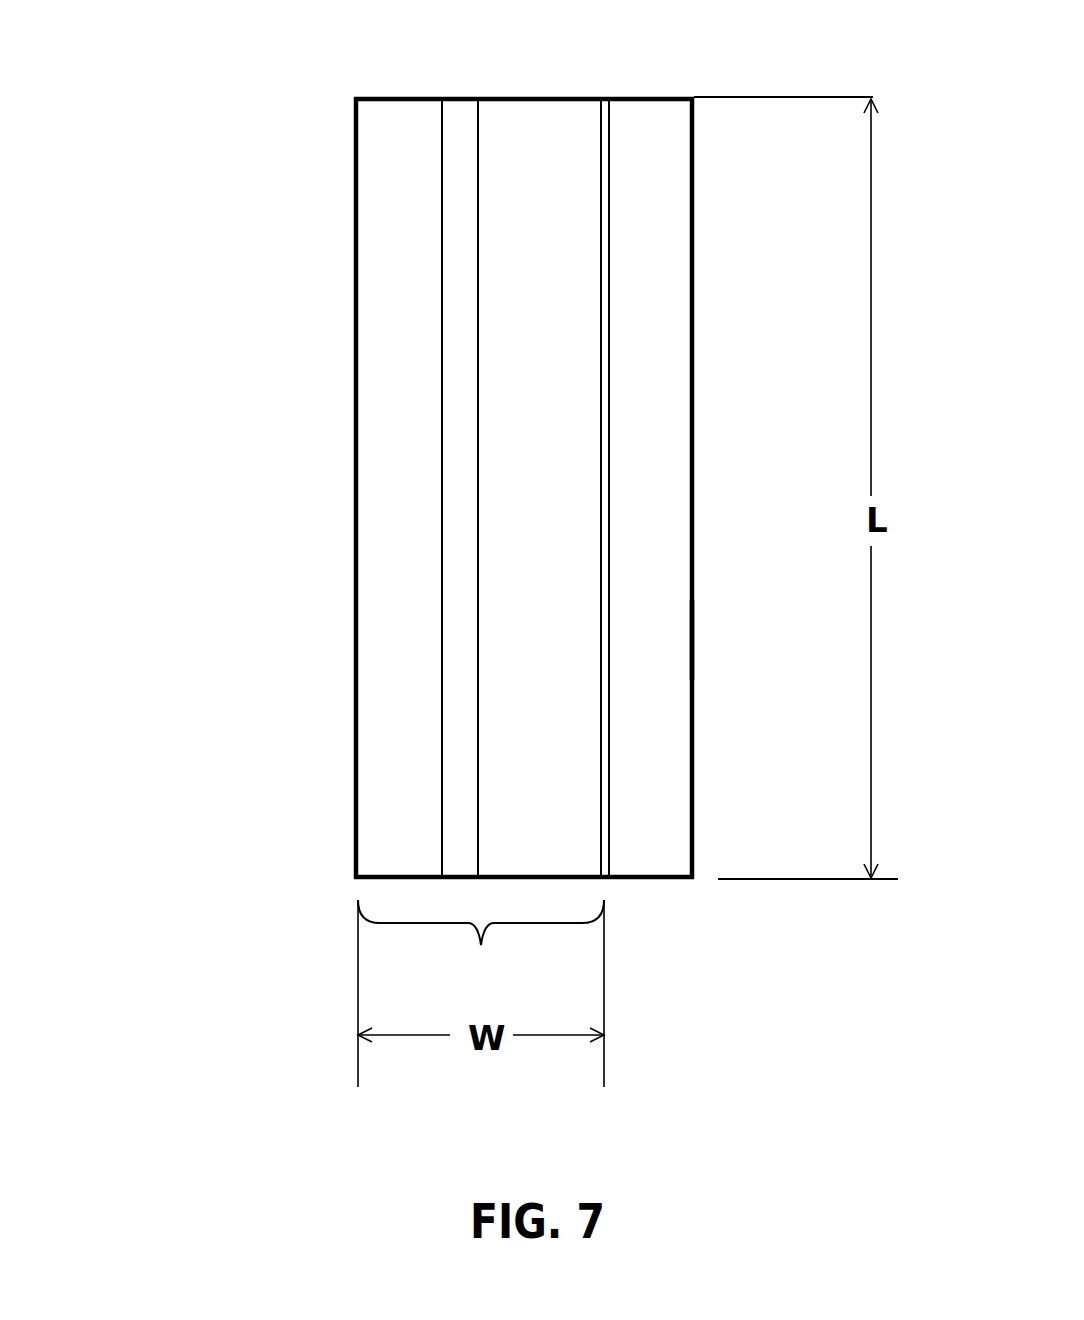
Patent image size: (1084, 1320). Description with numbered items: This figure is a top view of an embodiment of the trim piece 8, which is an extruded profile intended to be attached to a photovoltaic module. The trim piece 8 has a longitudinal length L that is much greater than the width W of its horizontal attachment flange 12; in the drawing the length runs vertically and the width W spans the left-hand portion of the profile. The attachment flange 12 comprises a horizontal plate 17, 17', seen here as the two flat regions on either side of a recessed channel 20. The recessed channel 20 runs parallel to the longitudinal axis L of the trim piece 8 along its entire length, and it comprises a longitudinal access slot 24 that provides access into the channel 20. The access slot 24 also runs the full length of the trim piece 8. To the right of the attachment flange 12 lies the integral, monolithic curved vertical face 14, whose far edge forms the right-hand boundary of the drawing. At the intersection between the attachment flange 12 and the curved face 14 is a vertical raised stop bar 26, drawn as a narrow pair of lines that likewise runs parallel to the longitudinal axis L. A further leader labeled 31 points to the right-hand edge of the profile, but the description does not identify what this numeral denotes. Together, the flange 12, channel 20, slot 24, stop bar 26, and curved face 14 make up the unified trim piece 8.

The trim piece 8 is at (192, 72).
The horizontal attachment flange 12 is at (481, 942).
The curved vertical face 14 is at (668, 511).
The horizontal plate 17 is at (409, 488).
The horizontal plate 17' is at (521, 488).
The recessed channel 20 is at (461, 712).
The access slot 24 is at (452, 565).
The stop bar 26 is at (610, 118).
The side edge 31 is at (694, 638).